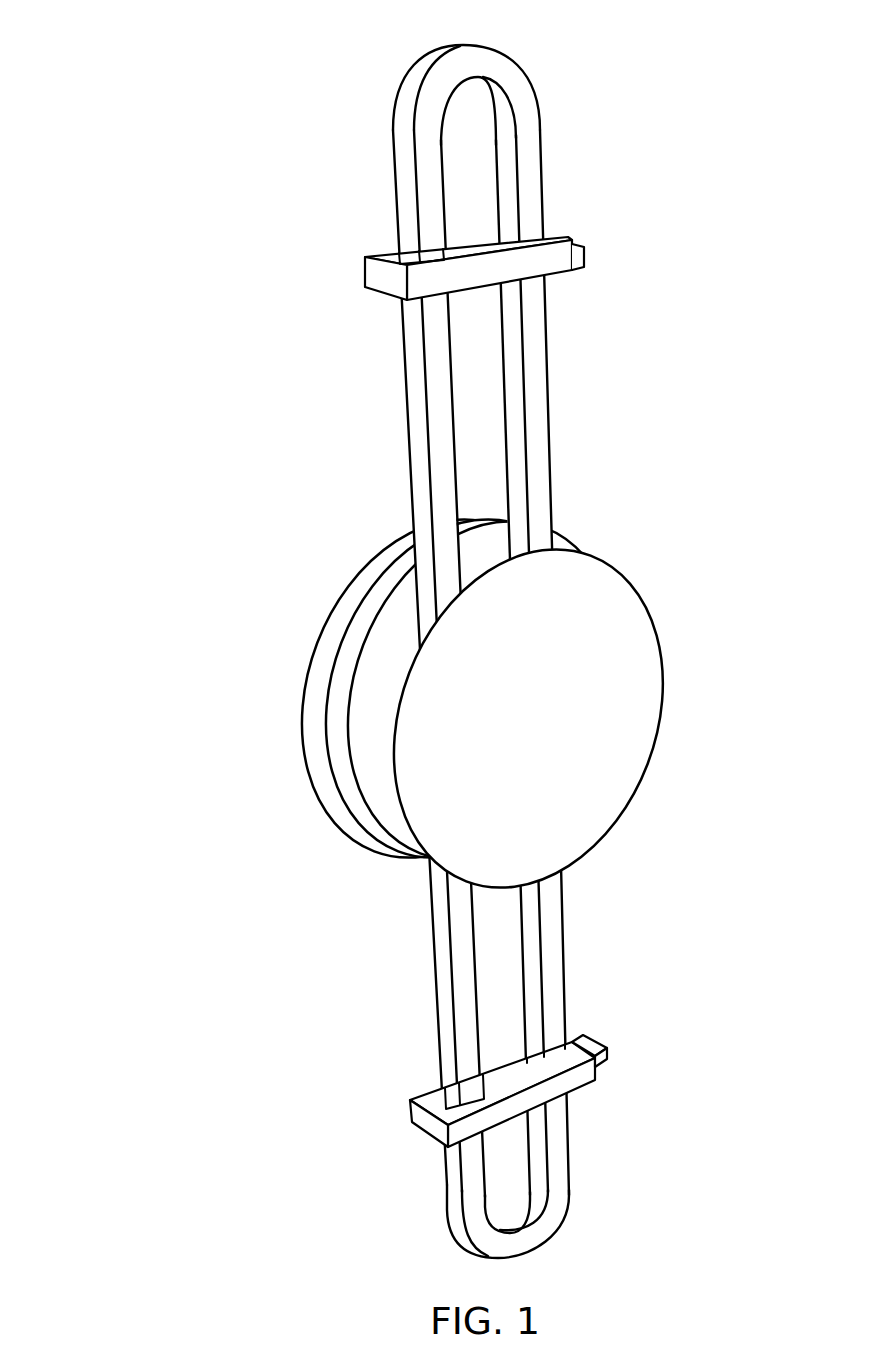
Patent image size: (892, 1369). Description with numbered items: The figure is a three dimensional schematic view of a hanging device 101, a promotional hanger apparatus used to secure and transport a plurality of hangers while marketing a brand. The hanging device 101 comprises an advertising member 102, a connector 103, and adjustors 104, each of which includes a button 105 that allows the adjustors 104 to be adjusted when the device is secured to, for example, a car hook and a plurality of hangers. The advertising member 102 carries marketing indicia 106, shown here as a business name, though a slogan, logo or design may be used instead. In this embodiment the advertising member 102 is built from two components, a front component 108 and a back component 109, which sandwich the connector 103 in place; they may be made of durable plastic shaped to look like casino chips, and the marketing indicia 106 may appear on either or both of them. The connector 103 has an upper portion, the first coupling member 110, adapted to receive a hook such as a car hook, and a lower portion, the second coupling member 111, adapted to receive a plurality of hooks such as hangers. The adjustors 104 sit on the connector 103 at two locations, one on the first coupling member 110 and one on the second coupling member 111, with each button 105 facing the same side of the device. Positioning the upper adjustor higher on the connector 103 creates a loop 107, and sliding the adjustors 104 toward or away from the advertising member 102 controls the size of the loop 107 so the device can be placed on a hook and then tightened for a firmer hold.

The hanging device 101 is at (200, 348).
The advertising member 102 is at (528, 717).
The connector 103 is at (546, 624).
The adjustors 104 is at (490, 692).
The button 105 is at (587, 1040).
The marketing indicia 106 is at (553, 672).
The loop 107 is at (470, 121).
The front component 108 is at (380, 763).
The back component 109 is at (343, 625).
The first coupling member 110 is at (490, 43).
The second coupling member 111 is at (546, 1238).